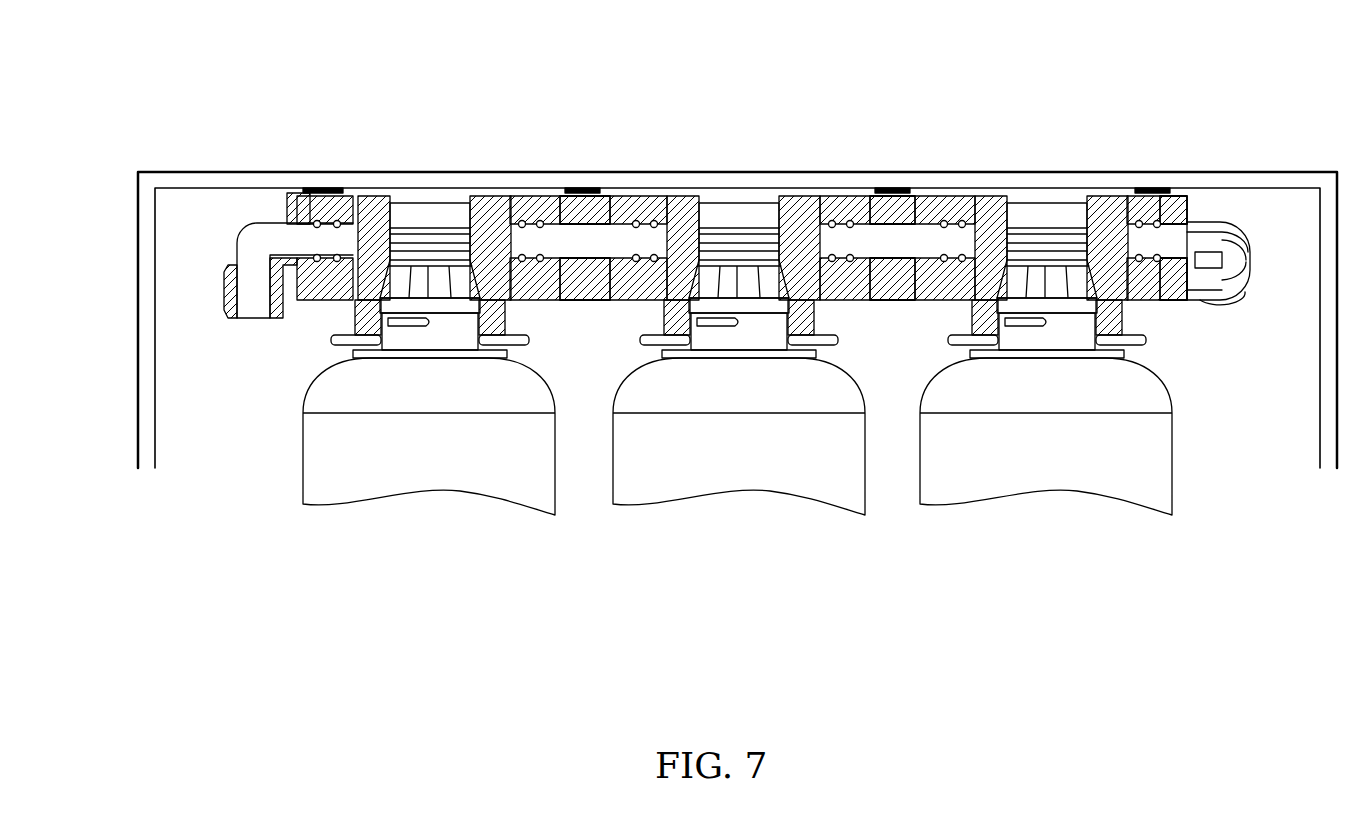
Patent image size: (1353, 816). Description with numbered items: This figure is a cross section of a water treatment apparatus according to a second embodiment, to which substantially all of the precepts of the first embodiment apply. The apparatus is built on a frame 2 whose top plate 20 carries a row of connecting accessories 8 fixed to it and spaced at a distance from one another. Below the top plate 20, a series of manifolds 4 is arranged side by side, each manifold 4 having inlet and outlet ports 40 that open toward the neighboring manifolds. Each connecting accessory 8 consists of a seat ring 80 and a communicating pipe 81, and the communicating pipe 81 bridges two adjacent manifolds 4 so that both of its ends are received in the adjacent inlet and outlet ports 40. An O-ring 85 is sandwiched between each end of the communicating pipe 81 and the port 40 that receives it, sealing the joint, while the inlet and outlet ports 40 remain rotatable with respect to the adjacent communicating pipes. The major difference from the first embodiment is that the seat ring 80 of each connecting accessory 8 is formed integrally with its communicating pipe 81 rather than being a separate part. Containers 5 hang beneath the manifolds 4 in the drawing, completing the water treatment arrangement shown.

The frame 2 is at (126, 303).
The top plate 20 is at (171, 182).
The connecting accessory 8 is at (350, 108).
The seat ring 80 is at (344, 222).
The communicating pipe 81 is at (262, 222).
The O-ring 85 is at (315, 222).
The inlet and outlet ports 40 is at (332, 278).
The manifold 4 is at (380, 300).
The container 5 is at (365, 482).